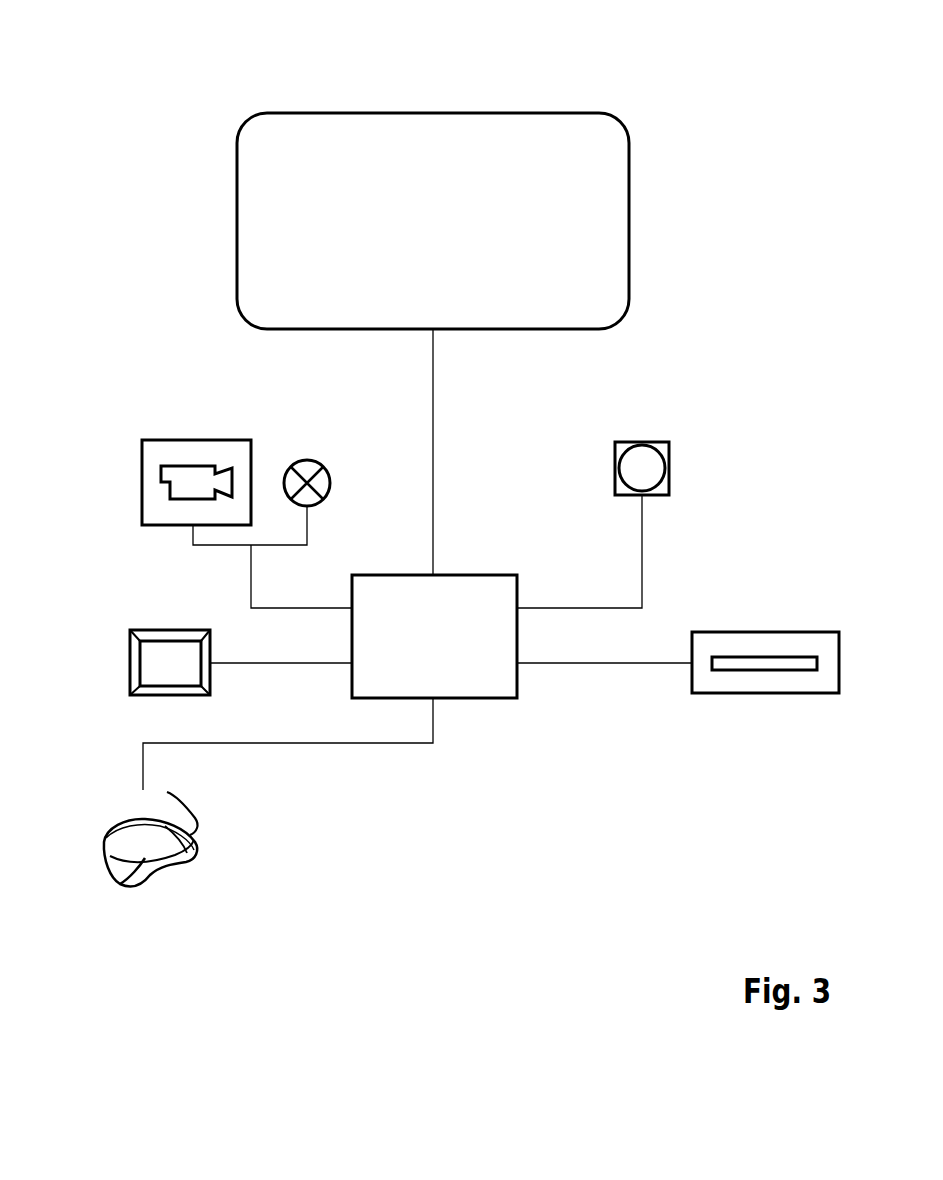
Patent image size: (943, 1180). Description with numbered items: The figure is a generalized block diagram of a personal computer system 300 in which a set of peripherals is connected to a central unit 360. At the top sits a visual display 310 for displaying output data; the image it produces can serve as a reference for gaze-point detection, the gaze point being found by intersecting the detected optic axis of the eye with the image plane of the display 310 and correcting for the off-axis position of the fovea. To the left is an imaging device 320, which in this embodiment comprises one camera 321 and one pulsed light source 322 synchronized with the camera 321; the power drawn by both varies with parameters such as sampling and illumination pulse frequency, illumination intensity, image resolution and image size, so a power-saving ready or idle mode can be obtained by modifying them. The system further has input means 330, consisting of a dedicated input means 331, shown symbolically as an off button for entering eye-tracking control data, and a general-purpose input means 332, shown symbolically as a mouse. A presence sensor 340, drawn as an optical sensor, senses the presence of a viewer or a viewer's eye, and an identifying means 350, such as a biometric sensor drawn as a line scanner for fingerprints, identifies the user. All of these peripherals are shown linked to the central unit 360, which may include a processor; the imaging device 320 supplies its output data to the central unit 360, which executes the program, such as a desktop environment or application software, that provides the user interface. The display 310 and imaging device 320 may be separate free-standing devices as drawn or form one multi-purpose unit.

The personal computer system 300 is at (153, 71).
The visual display 310 is at (637, 243).
The imaging device 320 is at (214, 413).
The camera 321 is at (138, 497).
The pulsed light source 322 is at (330, 466).
The input means 330 is at (85, 627).
The dedicated input means 331 is at (140, 630).
The general-purpose input means 332 is at (197, 868).
The presence sensor 340 is at (670, 467).
The identifying means 350 is at (748, 697).
The central unit 360 is at (493, 700).